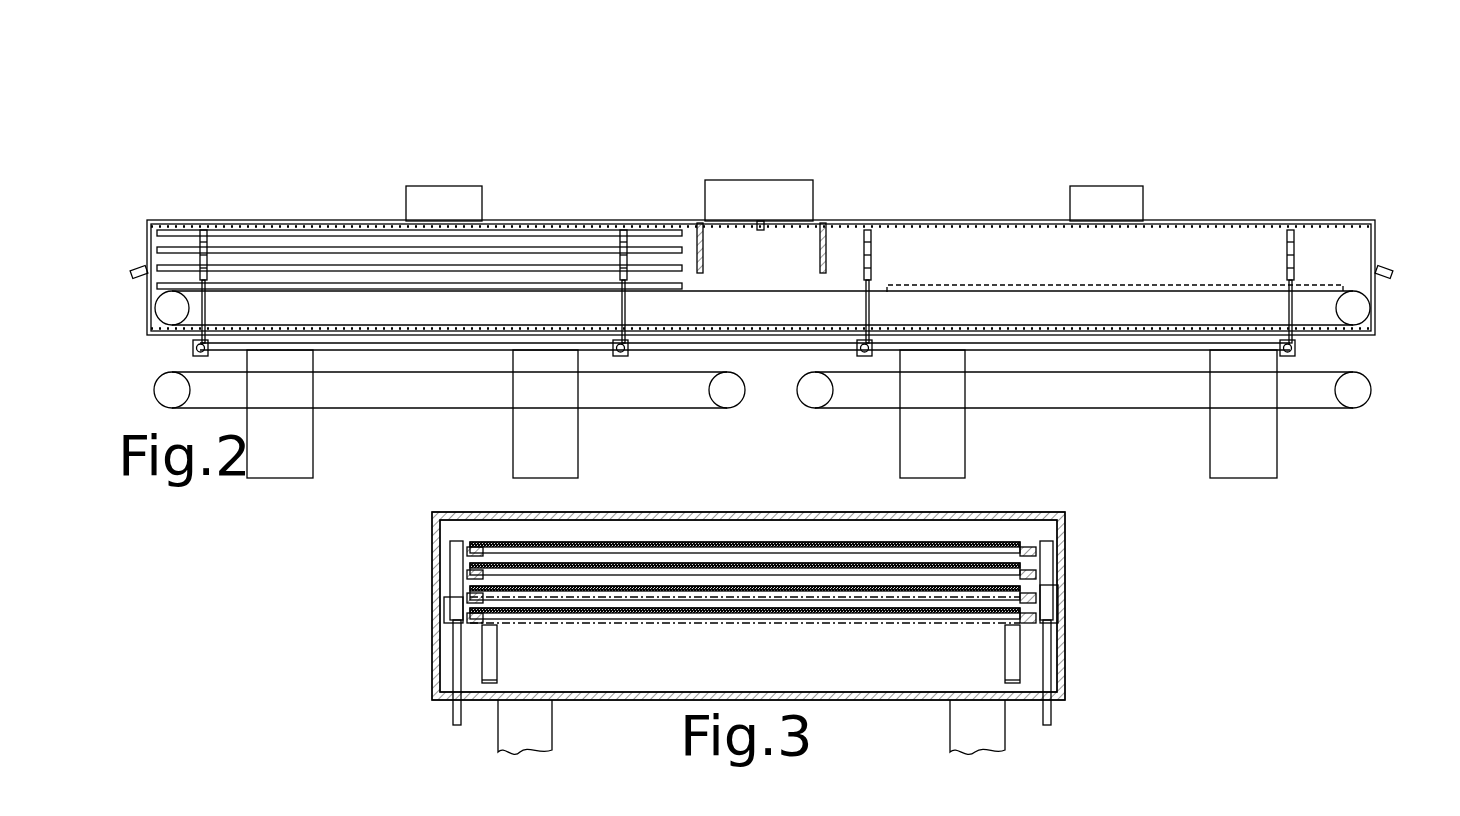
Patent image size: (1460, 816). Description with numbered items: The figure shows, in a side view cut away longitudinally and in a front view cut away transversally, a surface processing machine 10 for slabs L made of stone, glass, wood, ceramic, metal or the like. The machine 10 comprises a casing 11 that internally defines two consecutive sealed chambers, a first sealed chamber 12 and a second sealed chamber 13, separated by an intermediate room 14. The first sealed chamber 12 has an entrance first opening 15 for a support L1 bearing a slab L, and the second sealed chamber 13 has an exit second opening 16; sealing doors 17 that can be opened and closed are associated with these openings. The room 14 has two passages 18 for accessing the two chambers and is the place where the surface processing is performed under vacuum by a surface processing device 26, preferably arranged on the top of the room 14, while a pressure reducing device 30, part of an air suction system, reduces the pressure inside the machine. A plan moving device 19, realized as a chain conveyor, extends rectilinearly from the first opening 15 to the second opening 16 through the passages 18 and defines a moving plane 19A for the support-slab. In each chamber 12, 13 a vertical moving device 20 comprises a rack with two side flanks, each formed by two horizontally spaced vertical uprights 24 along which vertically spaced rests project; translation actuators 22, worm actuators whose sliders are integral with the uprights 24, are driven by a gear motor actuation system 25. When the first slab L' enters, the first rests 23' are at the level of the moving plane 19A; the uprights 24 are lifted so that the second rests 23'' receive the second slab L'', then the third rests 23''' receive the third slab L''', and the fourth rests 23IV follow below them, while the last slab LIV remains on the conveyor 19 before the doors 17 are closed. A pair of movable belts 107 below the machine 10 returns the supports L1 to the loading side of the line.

In FIG. 2, the surface processing machine 10 is at (1193, 153).
In FIG. 2, the casing 11 is at (900, 220).
In FIG. 2, the first sealed chamber 12 is at (311, 246).
In FIG. 3, the first sealed chamber 12 is at (985, 528).
In FIG. 2, the second sealed chamber 13 is at (966, 278).
In FIG. 2, the intermediate room 14 is at (772, 255).
In FIG. 2, the entrance first opening 15 is at (152, 284).
In FIG. 2, the exit second opening 16 is at (1373, 282).
In FIG. 2, the sealing doors 17 is at (140, 270).
In FIG. 2, the passages 18 is at (700, 222).
In FIG. 2, the plan moving device 19 is at (270, 296).
In FIG. 3, the plan moving device 19 is at (497, 653).
In FIG. 2, the moving plane 19A is at (368, 282).
In FIG. 3, the moving plane 19A is at (565, 607).
In FIG. 2, the vertical moving device 20 is at (208, 304).
In FIG. 3, the vertical moving device 20 is at (455, 655).
In FIG. 2, the translation actuators 22 is at (193, 348).
In FIG. 3, the first rests 23' is at (749, 552).
In FIG. 3, the second rests 23'' is at (752, 576).
In FIG. 3, the third rests 23''' is at (425, 605).
In FIG. 3, the fourth rests 23IV is at (1038, 604).
In FIG. 2, the vertical uprights 24 is at (205, 228).
In FIG. 3, the vertical uprights 24 is at (455, 545).
In FIG. 2, the gear motor actuation system 25 is at (342, 352).
In FIG. 2, the surface processing device 26 is at (759, 220).
In FIG. 2, the pressure reducing device 30 is at (445, 188).
In FIG. 2, the movable belts 107 is at (873, 395).
In FIG. 2, the support L1 is at (240, 290).
In FIG. 3, the support L1 is at (618, 552).
In FIG. 2, the slab L is at (607, 169).
In FIG. 3, the first slab L' is at (745, 520).
In FIG. 3, the second slab L'' is at (745, 533).
In FIG. 3, the third slab L''' is at (745, 531).
In FIG. 2, the last slab LIV is at (1195, 282).
In FIG. 3, the last slab LIV is at (833, 613).